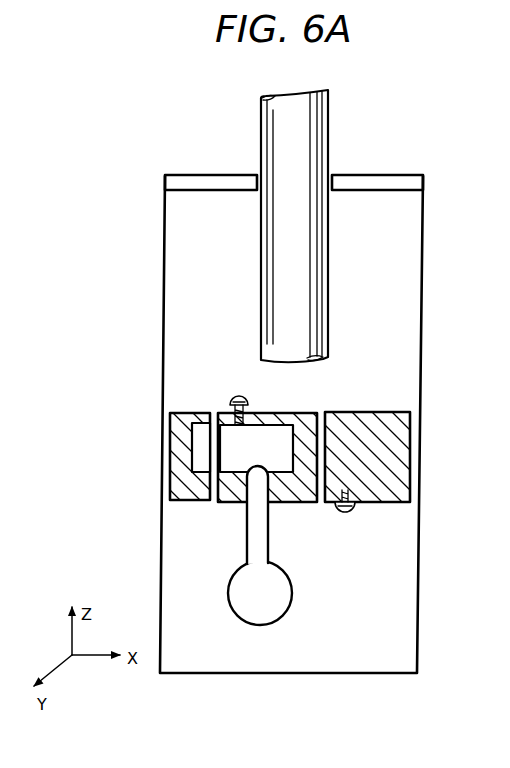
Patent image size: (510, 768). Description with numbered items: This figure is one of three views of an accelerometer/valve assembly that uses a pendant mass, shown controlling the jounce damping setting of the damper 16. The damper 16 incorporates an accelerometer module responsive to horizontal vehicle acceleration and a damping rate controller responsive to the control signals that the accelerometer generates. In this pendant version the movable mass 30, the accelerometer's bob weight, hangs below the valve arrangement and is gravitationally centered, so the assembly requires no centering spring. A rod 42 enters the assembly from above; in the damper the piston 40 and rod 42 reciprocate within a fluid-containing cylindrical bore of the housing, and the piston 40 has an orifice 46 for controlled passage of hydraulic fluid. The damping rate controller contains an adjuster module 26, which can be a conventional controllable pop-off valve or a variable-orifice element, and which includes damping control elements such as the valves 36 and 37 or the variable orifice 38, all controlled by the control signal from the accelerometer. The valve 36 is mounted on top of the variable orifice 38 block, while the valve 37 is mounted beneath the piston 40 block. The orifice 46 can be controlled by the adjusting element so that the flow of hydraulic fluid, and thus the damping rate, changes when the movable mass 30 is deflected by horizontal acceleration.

The damper 16 is at (164, 255).
The rod 42 is at (322, 147).
The adjuster module 26 is at (186, 451).
The piston 40 is at (412, 413).
The variable orifice 38 is at (266, 427).
The movable mass 30 is at (238, 580).
The valve 36 is at (230, 395).
The valve 37 is at (338, 508).
The orifice 46 is at (212, 498).